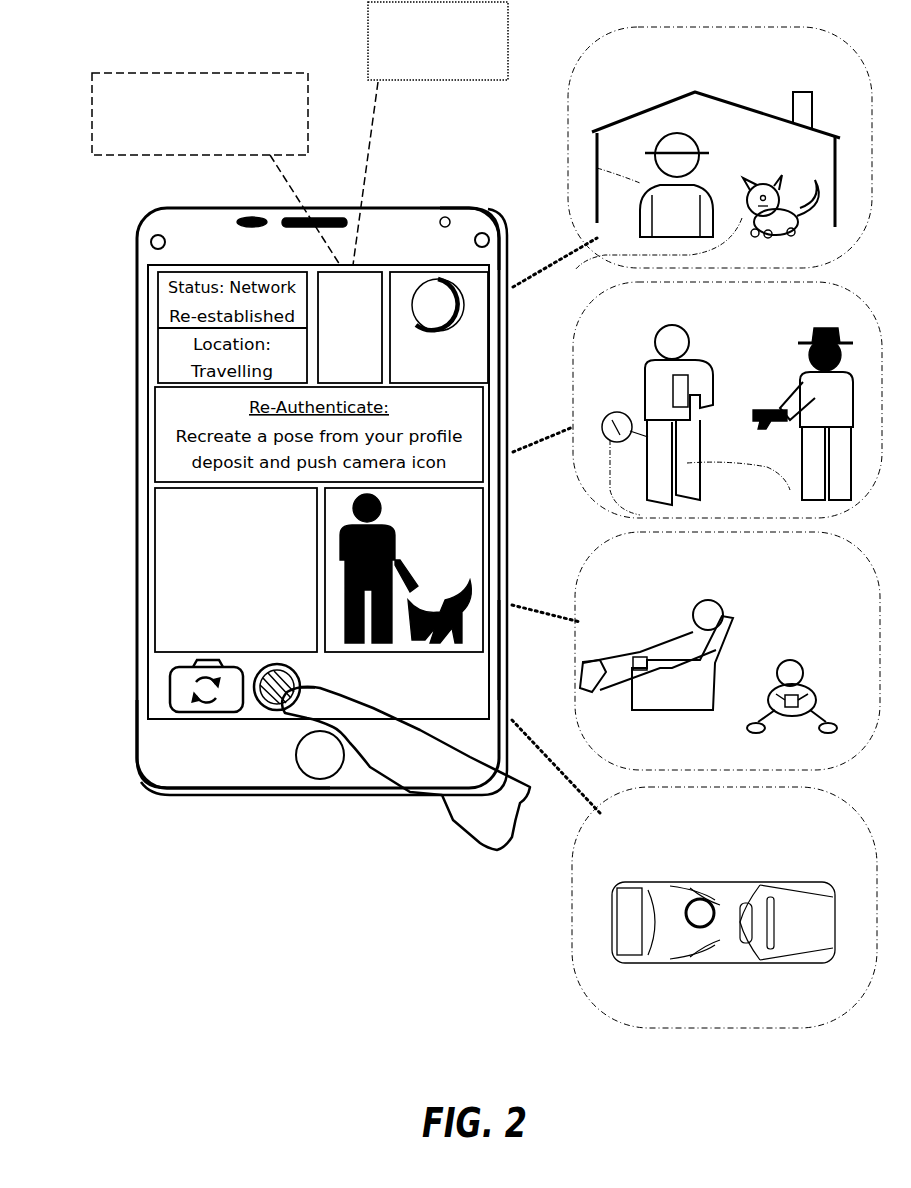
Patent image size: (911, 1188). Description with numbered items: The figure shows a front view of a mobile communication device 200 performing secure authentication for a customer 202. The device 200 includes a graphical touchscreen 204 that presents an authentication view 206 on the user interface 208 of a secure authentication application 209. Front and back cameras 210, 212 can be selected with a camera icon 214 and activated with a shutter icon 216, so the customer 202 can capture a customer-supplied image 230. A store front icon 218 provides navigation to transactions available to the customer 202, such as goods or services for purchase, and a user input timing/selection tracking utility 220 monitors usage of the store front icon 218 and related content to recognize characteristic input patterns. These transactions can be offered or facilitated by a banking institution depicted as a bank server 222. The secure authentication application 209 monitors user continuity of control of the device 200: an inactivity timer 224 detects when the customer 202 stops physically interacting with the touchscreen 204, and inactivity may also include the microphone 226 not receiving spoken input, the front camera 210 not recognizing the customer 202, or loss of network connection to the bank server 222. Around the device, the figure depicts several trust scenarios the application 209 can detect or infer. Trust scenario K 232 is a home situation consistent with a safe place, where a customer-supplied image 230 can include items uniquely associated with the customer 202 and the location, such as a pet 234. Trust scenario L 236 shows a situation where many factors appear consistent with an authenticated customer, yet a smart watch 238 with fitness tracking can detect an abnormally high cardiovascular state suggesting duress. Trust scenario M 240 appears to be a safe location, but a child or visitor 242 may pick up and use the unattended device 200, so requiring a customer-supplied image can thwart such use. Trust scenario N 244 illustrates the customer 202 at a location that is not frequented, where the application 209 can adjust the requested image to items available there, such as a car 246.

The mobile communication device 200 is at (133, 244).
The customer 202 is at (640, 183).
The graphical touchscreen 204 is at (387, 262).
The authentication view 206 is at (173, 657).
The user interface 208 is at (167, 720).
The secure authentication application 209 is at (511, 673).
The front camera 210 is at (158, 235).
The back camera 212 is at (492, 222).
The camera icon 214 is at (172, 692).
The shutter icon 216 is at (257, 703).
The store front icon 218 is at (350, 327).
The user input timing/selection tracking utility 220 is at (216, 169).
The bank server 222 is at (430, 133).
The inactivity timer 224 is at (450, 270).
The microphone 226 is at (270, 212).
The customer-supplied image 230 is at (445, 538).
The trust scenario K 232 is at (720, 147).
The pet 234 is at (612, 256).
The trust scenario L 236 is at (727, 400).
The smart watch 238 is at (600, 477).
The trust scenario M 240 is at (727, 651).
The child or visitor 242 is at (825, 686).
The trust scenario N 244 is at (724, 907).
The car 246 is at (640, 963).